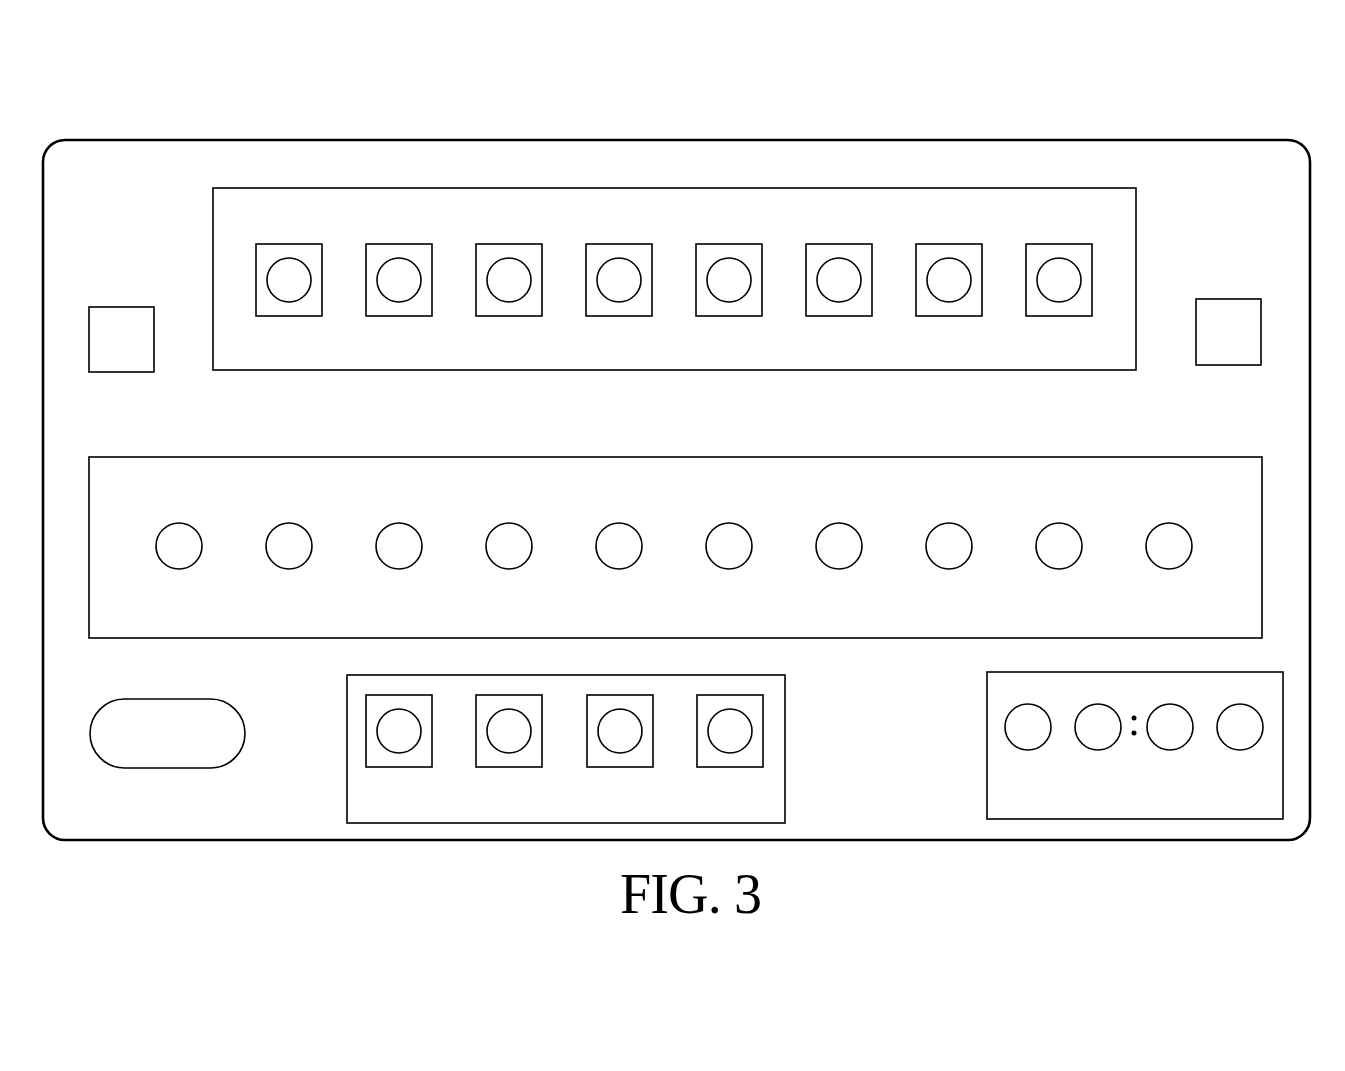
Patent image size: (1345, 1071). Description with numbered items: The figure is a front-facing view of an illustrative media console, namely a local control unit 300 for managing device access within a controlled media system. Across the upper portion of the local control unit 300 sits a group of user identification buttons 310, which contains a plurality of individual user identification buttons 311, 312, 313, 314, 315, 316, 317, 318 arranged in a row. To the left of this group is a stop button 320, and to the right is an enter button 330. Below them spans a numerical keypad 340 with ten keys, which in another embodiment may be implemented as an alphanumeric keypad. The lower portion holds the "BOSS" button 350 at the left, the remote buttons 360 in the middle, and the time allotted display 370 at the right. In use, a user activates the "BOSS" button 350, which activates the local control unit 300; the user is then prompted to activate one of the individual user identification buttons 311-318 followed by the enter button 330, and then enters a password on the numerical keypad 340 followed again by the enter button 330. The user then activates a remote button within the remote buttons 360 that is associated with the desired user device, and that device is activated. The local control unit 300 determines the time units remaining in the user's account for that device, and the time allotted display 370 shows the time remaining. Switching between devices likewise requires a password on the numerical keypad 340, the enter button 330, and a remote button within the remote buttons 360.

The local control unit 300 is at (1213, 92).
The user identification buttons 310 is at (427, 188).
The individual user identification button 311 is at (303, 244).
The individual user identification button 312 is at (413, 244).
The individual user identification button 313 is at (523, 244).
The individual user identification button 314 is at (633, 244).
The individual user identification button 315 is at (743, 244).
The individual user identification button 316 is at (853, 244).
The individual user identification button 317 is at (963, 244).
The individual user identification button 318 is at (1073, 244).
The stop button 320 is at (118, 307).
The enter button 330 is at (1229, 299).
The numerical keypad 340 is at (898, 457).
The "BOSS" button 350 is at (185, 768).
The remote buttons 360 is at (785, 708).
The time allotted display 370 is at (987, 785).